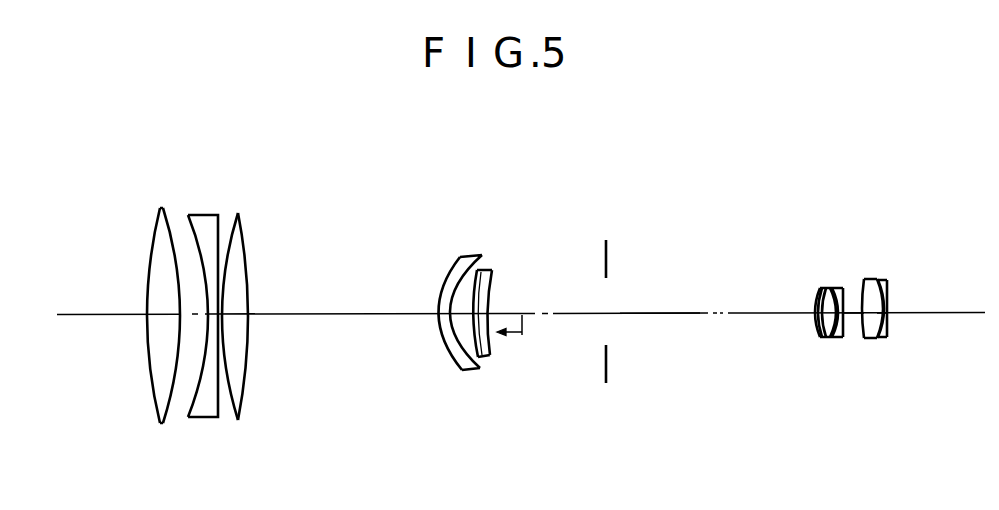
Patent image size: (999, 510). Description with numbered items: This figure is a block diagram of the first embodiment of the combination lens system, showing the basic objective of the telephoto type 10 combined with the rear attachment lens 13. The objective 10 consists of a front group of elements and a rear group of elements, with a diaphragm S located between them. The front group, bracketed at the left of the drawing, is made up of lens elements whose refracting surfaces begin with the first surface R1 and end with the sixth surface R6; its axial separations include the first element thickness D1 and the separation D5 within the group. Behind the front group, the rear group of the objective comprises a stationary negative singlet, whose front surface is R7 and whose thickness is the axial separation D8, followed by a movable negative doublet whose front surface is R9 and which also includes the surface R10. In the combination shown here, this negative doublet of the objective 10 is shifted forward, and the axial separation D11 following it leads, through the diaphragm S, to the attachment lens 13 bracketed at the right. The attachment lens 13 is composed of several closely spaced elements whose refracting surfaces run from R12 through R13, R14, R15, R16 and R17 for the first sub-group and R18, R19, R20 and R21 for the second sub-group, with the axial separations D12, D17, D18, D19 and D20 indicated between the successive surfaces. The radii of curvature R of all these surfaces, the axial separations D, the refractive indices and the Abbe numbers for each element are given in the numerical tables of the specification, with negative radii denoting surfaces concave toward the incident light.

The basic objective of the telephoto type 10 is at (508, 182).
The rear attachment lens 13 is at (897, 223).
The diaphragm S is at (607, 262).
The refracting surface R1 is at (152, 405).
The refracting surface R6 is at (245, 402).
The front surface of negative singlet R7 is at (453, 363).
The front surface of negative doublet R9 is at (472, 348).
The refracting surface R10 is at (492, 347).
The refracting surface R12 is at (815, 325).
The refracting surface R13 is at (817, 330).
The refracting surface R14 is at (822, 333).
The refracting surface R15 is at (828, 332).
The refracting surface R16 is at (835, 332).
The refracting surface R17 is at (842, 330).
The refracting surface R18 is at (861, 337).
The refracting surface R19 is at (873, 337).
The refracting surface R20 is at (878, 340).
The refracting surface R21 is at (887, 337).
The axial separation D1 is at (165, 313).
The axial separation D5 is at (235, 313).
The axial separation D8 is at (462, 310).
The axial separation D11 is at (703, 312).
The axial separation D12 is at (816, 307).
The axial separation D17 is at (854, 308).
The axial separation D18 is at (838, 288).
The axial separation D19 is at (883, 307).
The axial separation D20 is at (887, 310).